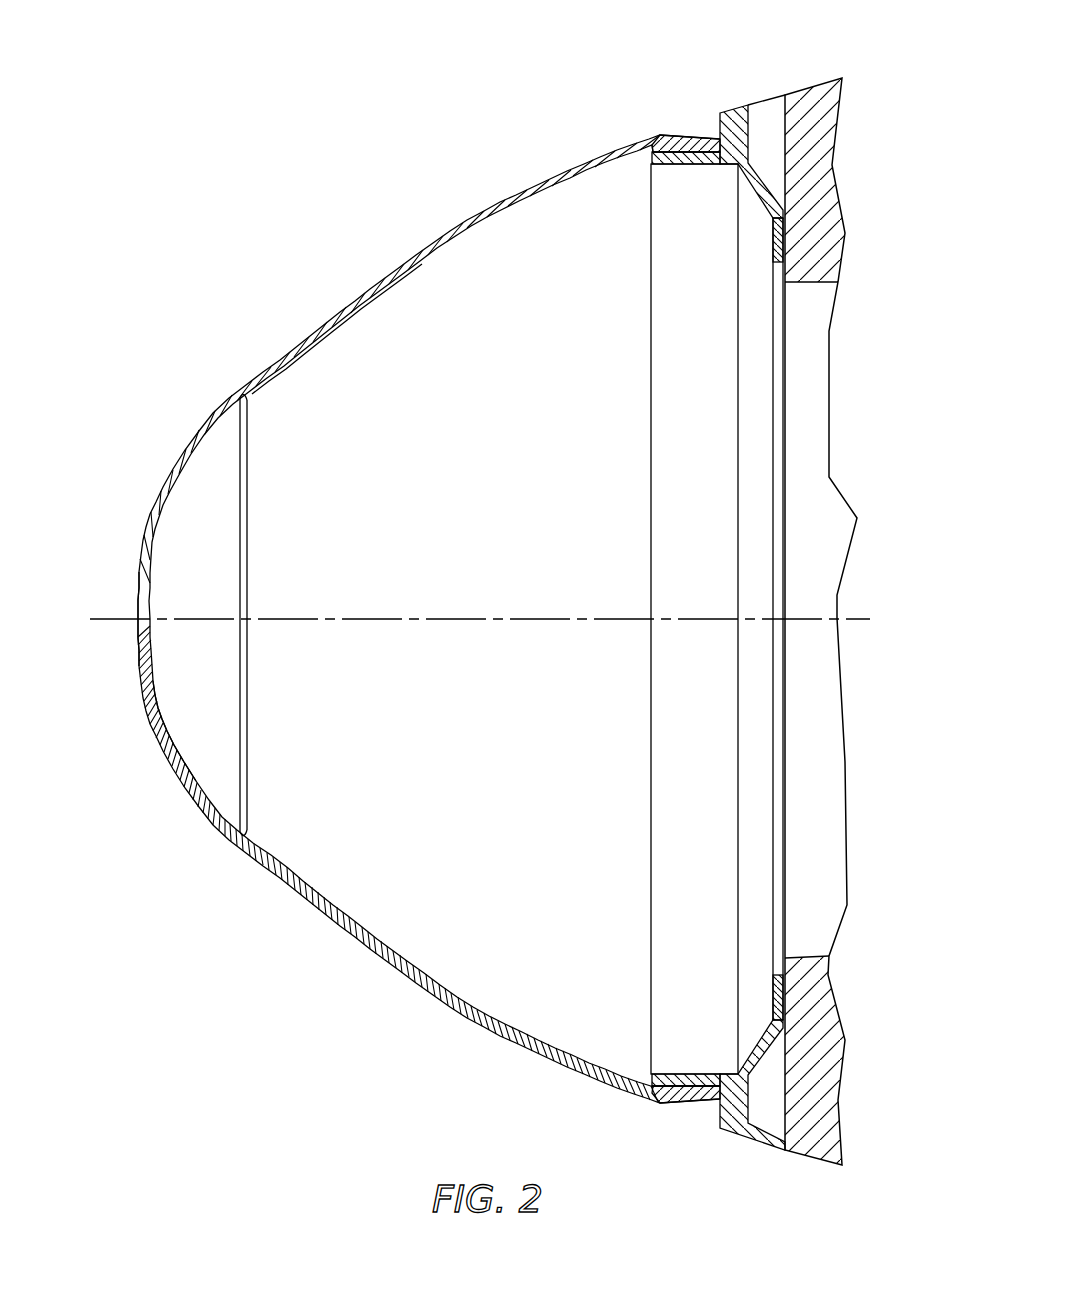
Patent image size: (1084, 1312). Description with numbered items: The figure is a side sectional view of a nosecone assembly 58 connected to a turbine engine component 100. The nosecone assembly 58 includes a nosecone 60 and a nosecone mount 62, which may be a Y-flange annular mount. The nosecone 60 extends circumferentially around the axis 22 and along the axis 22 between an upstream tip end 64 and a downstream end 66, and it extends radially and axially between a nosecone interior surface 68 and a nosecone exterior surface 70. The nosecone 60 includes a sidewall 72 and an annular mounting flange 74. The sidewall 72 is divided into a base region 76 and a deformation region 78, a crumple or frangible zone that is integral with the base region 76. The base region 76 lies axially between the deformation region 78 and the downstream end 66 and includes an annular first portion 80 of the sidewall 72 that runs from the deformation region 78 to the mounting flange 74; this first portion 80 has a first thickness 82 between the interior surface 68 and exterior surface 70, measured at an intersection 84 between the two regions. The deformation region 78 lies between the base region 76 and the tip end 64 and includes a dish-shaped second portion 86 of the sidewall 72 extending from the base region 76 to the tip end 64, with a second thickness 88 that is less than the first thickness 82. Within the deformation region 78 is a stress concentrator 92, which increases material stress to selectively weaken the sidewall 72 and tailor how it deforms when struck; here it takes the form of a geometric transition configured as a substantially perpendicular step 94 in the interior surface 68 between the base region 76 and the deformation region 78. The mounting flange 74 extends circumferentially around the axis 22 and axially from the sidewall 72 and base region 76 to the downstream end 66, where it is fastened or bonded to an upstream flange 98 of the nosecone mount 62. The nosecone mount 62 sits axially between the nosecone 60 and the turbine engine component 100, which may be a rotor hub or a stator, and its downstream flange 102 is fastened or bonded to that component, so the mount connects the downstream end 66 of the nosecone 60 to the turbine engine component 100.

The axis 22 is at (866, 617).
The nosecone assembly 58 is at (127, 172).
The nosecone 60 is at (418, 245).
The nosecone mount 62 is at (735, 112).
The upstream tip end 64 is at (133, 626).
The downstream end 66 is at (718, 1108).
The nosecone interior surface 68 is at (530, 205).
The nosecone exterior surface 70 is at (535, 182).
The sidewall 72 is at (330, 302).
The mounting flange 74 is at (690, 142).
The base region 76 is at (662, 60).
The deformation region 78 is at (248, 72).
The first portion 80 is at (397, 980).
The first thickness 82 is at (245, 928).
The intersection 84 is at (228, 868).
The second portion 86 is at (157, 748).
The second thickness 88 is at (235, 797).
The stress concentrator 92 is at (249, 653).
The perpendicular step 94 is at (249, 398).
The upstream flange 98 is at (700, 166).
The turbine engine component 100 is at (835, 155).
The downstream flange 102 is at (773, 240).